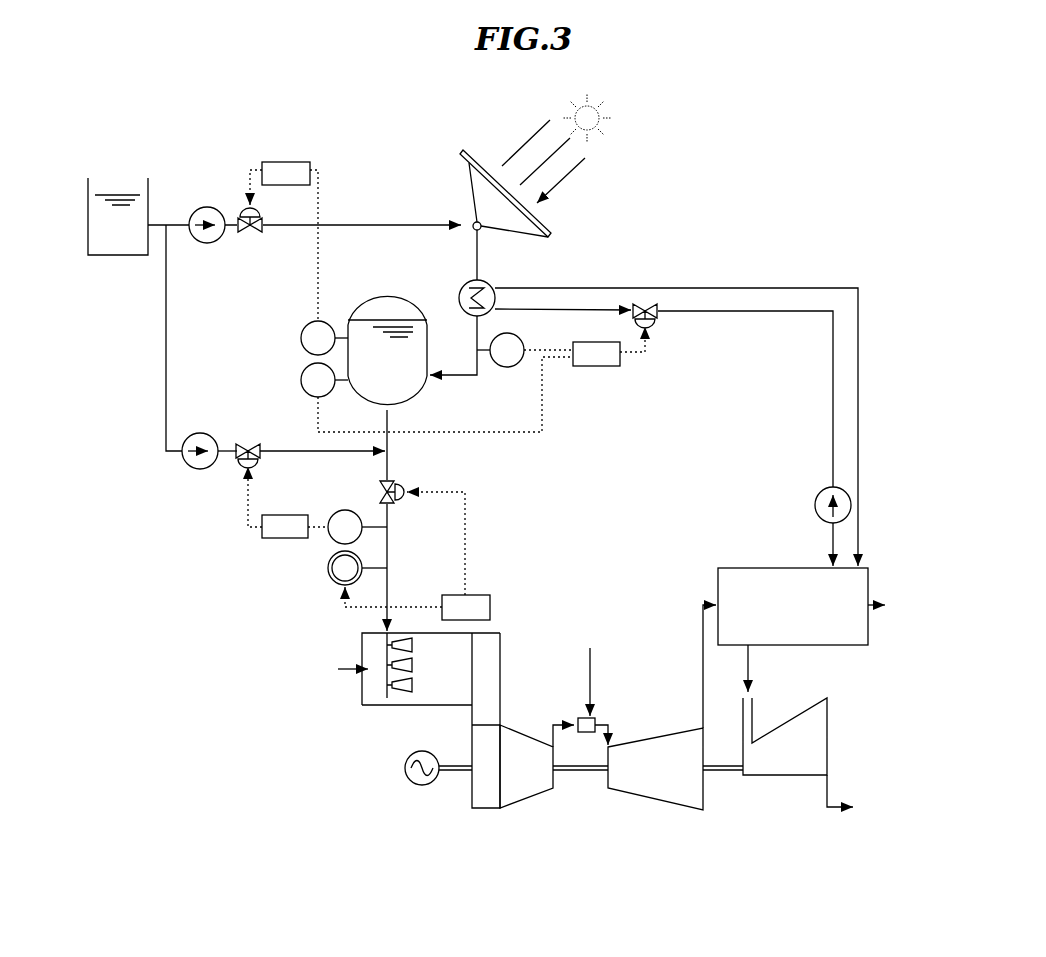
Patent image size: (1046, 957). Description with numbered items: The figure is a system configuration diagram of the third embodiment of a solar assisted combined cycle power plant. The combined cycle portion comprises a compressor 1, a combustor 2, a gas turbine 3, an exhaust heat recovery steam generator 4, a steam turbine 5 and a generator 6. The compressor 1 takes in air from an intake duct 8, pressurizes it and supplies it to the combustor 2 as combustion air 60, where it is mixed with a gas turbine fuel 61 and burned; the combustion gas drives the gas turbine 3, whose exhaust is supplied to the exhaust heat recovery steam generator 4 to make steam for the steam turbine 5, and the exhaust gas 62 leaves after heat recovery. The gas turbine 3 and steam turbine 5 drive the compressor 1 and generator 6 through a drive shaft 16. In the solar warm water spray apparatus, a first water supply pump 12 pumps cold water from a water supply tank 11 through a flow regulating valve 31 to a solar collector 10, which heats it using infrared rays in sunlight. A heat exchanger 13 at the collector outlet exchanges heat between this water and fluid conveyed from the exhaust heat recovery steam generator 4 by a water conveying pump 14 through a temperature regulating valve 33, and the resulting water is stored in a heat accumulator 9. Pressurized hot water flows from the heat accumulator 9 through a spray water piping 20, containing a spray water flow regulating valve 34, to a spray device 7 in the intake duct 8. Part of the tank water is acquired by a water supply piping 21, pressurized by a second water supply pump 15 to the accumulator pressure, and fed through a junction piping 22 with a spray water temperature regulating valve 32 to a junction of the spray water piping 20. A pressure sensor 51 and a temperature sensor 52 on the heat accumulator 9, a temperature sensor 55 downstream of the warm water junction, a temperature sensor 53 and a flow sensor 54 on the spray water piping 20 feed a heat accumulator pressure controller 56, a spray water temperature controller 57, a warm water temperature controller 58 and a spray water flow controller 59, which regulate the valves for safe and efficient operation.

The compressor 1 is at (517, 805).
The combustor 2 is at (578, 718).
The gas turbine 3 is at (684, 825).
The exhaust heat recovery steam generator 4 is at (773, 568).
The steam turbine 5 is at (776, 775).
The generator 6 is at (405, 768).
The spray device 7 is at (368, 643).
The intake duct 8 is at (373, 705).
The heat accumulator 9 is at (386, 292).
The solar collector 10 is at (466, 172).
The water supply tank 11 is at (100, 255).
The first water supply pump 12 is at (206, 207).
The heat exchanger 13 is at (462, 288).
The water conveying pump 14 is at (818, 492).
The second water supply pump 15 is at (198, 433).
The drive shaft 16 is at (578, 773).
The spray water piping 20 is at (388, 549).
The water supply piping 21 is at (163, 298).
The junction piping 22 is at (306, 450).
The flow regulating valve 31 is at (258, 232).
The spray water temperature regulating valve 32 is at (237, 463).
The temperature regulating valve 33 is at (660, 320).
The spray water flow regulating valve 34 is at (403, 484).
The pressure sensor 51 is at (301, 333).
The temperature sensor 52 is at (301, 380).
The temperature sensor 53 is at (333, 514).
The flow sensor 54 is at (328, 576).
The temperature sensor 55 is at (503, 368).
The heat accumulator pressure controller 56 is at (265, 162).
The spray water temperature controller 57 is at (262, 538).
The warm water temperature controller 58 is at (608, 366).
The spray water flow controller 59 is at (485, 595).
The combustion air 60 is at (331, 678).
The gas turbine fuel 61 is at (578, 672).
The exhaust gas 62 is at (890, 588).